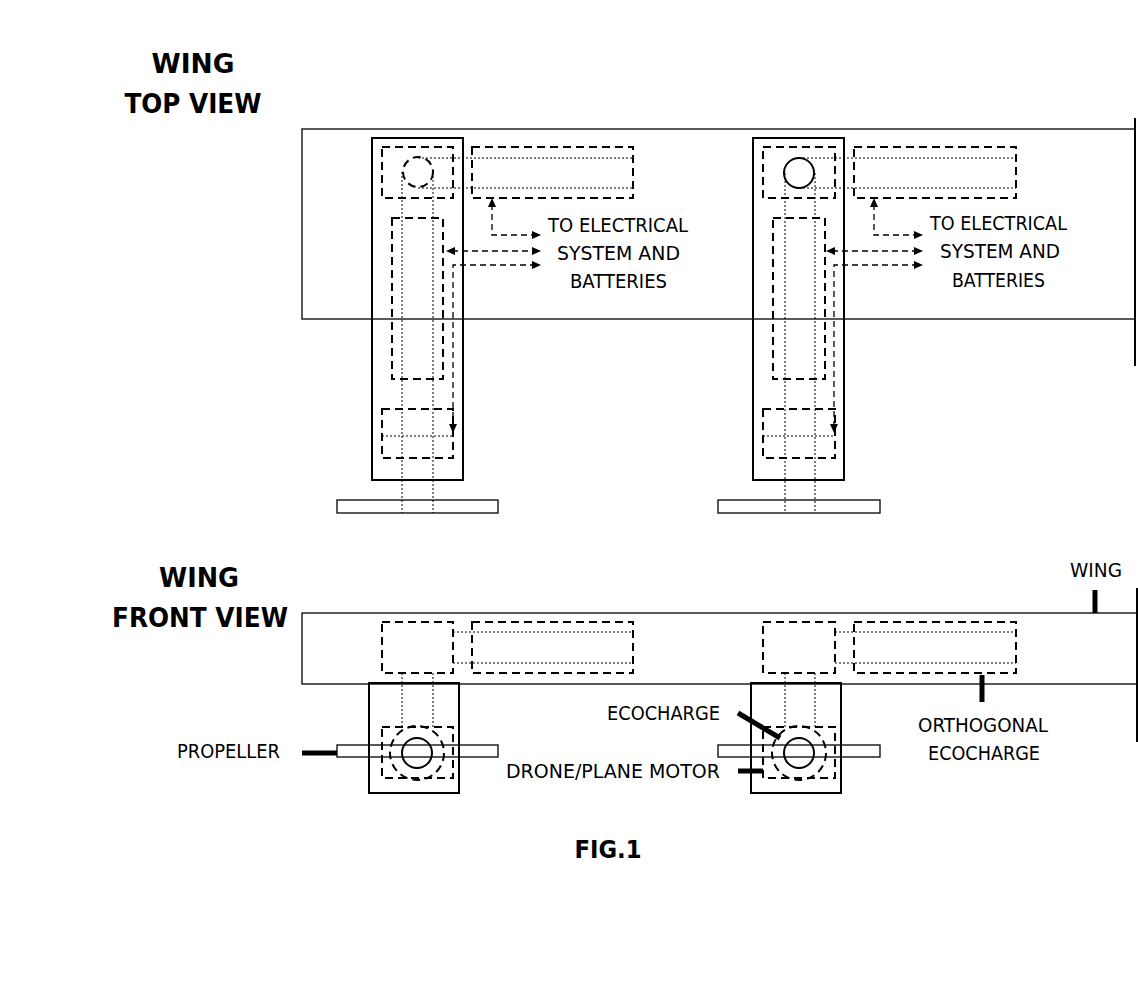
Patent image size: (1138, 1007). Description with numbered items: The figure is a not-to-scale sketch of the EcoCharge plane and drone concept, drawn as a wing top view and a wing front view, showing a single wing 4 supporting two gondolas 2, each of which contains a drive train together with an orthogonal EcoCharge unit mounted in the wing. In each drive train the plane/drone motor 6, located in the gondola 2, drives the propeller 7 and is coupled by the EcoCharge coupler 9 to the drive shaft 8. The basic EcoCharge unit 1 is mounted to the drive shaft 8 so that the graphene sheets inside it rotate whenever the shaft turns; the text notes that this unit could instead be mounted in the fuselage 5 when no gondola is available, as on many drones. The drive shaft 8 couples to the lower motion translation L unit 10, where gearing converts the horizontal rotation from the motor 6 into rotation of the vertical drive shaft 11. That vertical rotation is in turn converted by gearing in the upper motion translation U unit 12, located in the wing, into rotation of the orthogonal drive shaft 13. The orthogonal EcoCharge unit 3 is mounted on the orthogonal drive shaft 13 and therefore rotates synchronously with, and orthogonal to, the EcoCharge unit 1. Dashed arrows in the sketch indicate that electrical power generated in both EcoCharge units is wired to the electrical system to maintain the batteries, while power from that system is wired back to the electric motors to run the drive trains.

The EcoCharge unit 1 is at (392, 359).
The gondola 2 is at (845, 399).
The orthogonal EcoCharge unit 3 is at (553, 147).
The wing 4 is at (1085, 129).
The fuselage 5 is at (1135, 350).
The plane/drone motor 6 is at (382, 450).
The propeller 7 is at (337, 506).
The drive shaft 8 is at (400, 392).
The EcoCharge coupler 9 is at (382, 419).
The motion translation L unit 10 is at (393, 147).
The vertical drive shaft 11 is at (402, 714).
The motion translation U unit 12 is at (797, 622).
The orthogonal drive shaft 13 is at (465, 632).